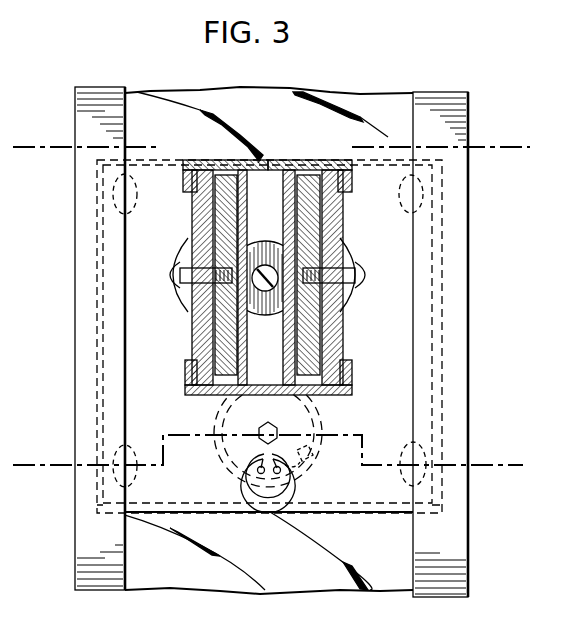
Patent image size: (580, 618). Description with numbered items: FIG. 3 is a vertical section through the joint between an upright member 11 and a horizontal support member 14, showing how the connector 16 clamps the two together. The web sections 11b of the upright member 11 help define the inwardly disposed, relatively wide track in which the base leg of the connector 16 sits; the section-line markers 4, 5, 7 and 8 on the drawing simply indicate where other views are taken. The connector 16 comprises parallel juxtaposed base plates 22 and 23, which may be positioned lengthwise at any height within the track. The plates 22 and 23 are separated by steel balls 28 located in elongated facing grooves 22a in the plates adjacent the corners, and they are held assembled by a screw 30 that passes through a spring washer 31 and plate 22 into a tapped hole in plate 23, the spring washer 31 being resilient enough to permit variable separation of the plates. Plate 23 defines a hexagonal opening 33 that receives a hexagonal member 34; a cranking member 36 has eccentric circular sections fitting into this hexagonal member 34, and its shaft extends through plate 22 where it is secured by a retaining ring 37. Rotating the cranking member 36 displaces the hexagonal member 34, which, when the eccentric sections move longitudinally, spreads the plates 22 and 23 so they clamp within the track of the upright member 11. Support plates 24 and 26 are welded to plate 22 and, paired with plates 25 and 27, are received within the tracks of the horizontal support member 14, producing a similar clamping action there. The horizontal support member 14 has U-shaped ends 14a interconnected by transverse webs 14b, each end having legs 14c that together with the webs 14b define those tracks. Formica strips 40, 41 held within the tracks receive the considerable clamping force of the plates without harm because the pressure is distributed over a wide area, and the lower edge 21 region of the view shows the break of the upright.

The section line 4- 4 is at (28, 147).
The section line 5- 5 is at (28, 465).
The section line 7- 7 is at (128, 128).
The section line 8- 8 is at (128, 235).
The upright member 11 is at (472, 549).
The web sections 11b is at (130, 536).
The horizontal support member 14 is at (345, 393).
The ends 14a is at (258, 162).
The transverse webs 14b is at (413, 160).
The legs 14c is at (183, 178).
The connector 16 is at (370, 518).
The bottom edge 21 is at (202, 574).
The base plate 22 is at (176, 515).
The elongated groove 22a is at (428, 440).
The base plate 23 is at (233, 515).
The support plate 24 is at (325, 345).
The support plate 25 is at (310, 225).
The support plate 26 is at (192, 325).
The support plate 27 is at (215, 340).
The steel balls 28 is at (117, 212).
The screw 30 is at (265, 277).
The spring washer 31 is at (263, 294).
The hexagonal opening 33 is at (312, 456).
The hexagonal member 34 is at (300, 468).
The cranking member 36 is at (212, 414).
The retaining ring 37 is at (248, 445).
The formica strip 40 is at (343, 246).
The formica strip 41 is at (215, 215).